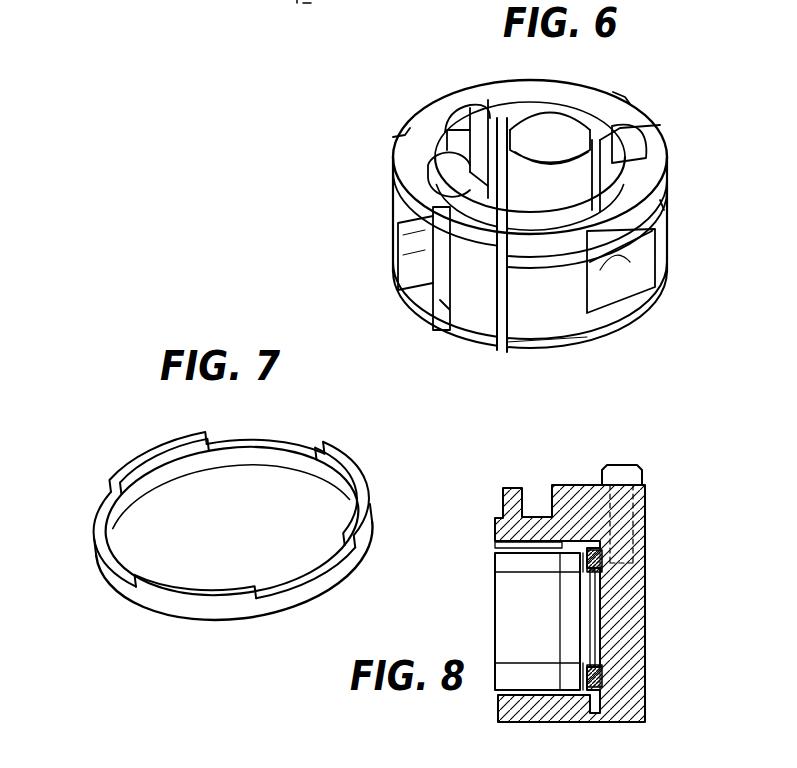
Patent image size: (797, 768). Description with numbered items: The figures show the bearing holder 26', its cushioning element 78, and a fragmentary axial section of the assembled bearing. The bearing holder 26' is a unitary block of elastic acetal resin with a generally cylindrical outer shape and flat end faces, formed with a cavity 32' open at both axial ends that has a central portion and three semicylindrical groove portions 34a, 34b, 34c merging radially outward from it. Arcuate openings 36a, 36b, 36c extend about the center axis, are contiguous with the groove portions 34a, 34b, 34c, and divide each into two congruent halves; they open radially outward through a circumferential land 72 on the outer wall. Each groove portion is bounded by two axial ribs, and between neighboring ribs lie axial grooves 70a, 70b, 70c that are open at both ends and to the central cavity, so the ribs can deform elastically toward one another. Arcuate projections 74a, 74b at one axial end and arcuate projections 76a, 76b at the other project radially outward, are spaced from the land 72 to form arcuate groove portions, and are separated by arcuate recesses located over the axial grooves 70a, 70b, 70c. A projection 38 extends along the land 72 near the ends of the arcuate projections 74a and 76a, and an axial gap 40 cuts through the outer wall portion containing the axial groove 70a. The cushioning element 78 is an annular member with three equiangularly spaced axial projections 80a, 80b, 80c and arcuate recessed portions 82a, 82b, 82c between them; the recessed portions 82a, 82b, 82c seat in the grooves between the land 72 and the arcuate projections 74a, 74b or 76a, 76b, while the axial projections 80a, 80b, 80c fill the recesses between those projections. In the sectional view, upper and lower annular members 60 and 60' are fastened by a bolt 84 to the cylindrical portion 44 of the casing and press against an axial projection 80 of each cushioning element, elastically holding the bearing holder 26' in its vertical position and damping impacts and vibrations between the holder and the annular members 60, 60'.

In FIG. 6, the bearing holder 26' is at (530, 168).
In FIG. 8, the bearing holder 26' is at (539, 616).
In FIG. 6, the cavity 32' is at (605, 130).
In FIG. 6, the semicylindrical groove portion 34a is at (447, 157).
In FIG. 6, the semicylindrical groove portion 34b is at (663, 207).
In FIG. 6, the semicylindrical groove portion 34c is at (540, 107).
In FIG. 6, the arcuate opening 36a is at (405, 236).
In FIG. 6, the arcuate opening 36b is at (634, 282).
In FIG. 6, the arcuate opening 36c is at (557, 137).
In FIG. 6, the projection 38 is at (447, 310).
In FIG. 6, the axial gap 40 is at (499, 340).
In FIG. 6, the axial groove 70a is at (393, 195).
In FIG. 6, the axial groove 70b is at (634, 147).
In FIG. 6, the axial groove 70c is at (470, 112).
In FIG. 6, the circumferential land 72 is at (547, 323).
In FIG. 8, the circumferential land 72 is at (597, 643).
In FIG. 6, the arcuate projection 74a is at (395, 155).
In FIG. 6, the arcuate projection 74b is at (623, 98).
In FIG. 6, the arcuate projection 76a is at (418, 311).
In FIG. 6, the arcuate projection 76b is at (640, 320).
In FIG. 7, the cushioning element 78 is at (101, 584).
In FIG. 7, the axial projection 80a is at (220, 590).
In FIG. 7, the axial projection 80b is at (362, 512).
In FIG. 7, the axial projection 80c is at (190, 440).
In FIG. 7, the arcuate recessed portion 82a is at (302, 591).
In FIG. 7, the arcuate recessed portion 82b is at (270, 450).
In FIG. 7, the arcuate recessed portion 82c is at (110, 545).
In FIG. 8, the bolt 84 is at (642, 475).
In FIG. 8, the upper annular member 60 is at (594, 603).
In FIG. 8, the lower annular member 60' is at (544, 726).
In FIG. 8, the cylindrical portion 44 is at (646, 609).
In FIG. 8, the axial projection 80 is at (607, 564).